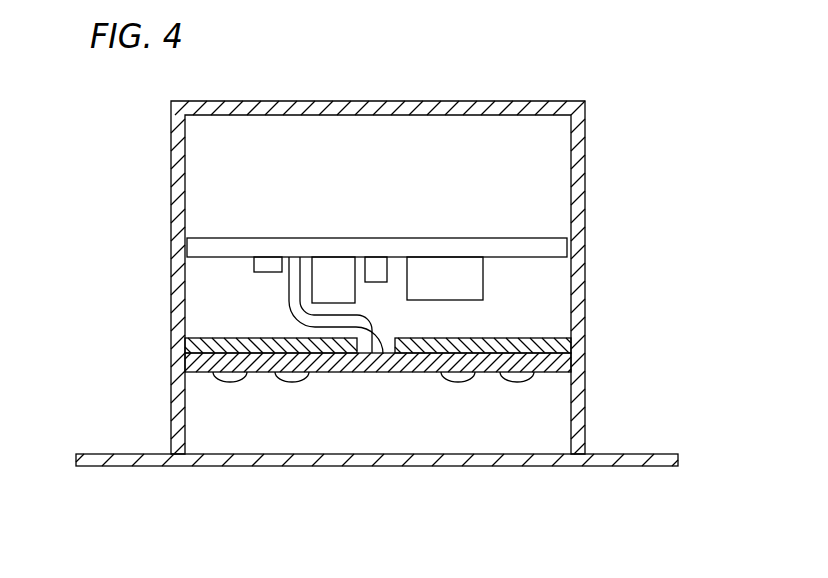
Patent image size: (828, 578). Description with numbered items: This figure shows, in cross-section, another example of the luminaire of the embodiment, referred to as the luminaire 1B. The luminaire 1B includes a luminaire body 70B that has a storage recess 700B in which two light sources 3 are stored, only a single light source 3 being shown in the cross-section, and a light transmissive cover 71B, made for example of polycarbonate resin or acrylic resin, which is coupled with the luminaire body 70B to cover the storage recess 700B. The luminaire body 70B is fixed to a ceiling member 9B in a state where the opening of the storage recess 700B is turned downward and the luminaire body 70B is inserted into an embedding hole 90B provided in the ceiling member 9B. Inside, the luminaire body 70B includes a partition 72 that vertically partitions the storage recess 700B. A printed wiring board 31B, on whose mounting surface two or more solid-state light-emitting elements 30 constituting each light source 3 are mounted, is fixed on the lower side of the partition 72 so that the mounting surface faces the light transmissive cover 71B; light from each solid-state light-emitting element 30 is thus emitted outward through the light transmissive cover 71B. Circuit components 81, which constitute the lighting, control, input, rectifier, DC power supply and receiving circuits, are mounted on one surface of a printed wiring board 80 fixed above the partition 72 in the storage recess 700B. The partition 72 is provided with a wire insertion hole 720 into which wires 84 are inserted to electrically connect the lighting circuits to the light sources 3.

The luminaire 1B is at (170, 133).
The luminaire body 70B is at (583, 210).
The storage recess 700B is at (198, 402).
The printed wiring board 80 is at (533, 245).
The circuit components 81 is at (268, 262).
The wires 84 is at (288, 296).
The partition 72 is at (525, 343).
The wire insertion hole 720 is at (386, 352).
The printed wiring board 31B is at (565, 362).
The solid-state light-emitting element 30 is at (245, 378).
The light source 3 is at (448, 512).
The ceiling member 9B is at (640, 454).
The light transmissive cover 71B is at (491, 467).
The embedding hole 90B is at (576, 467).